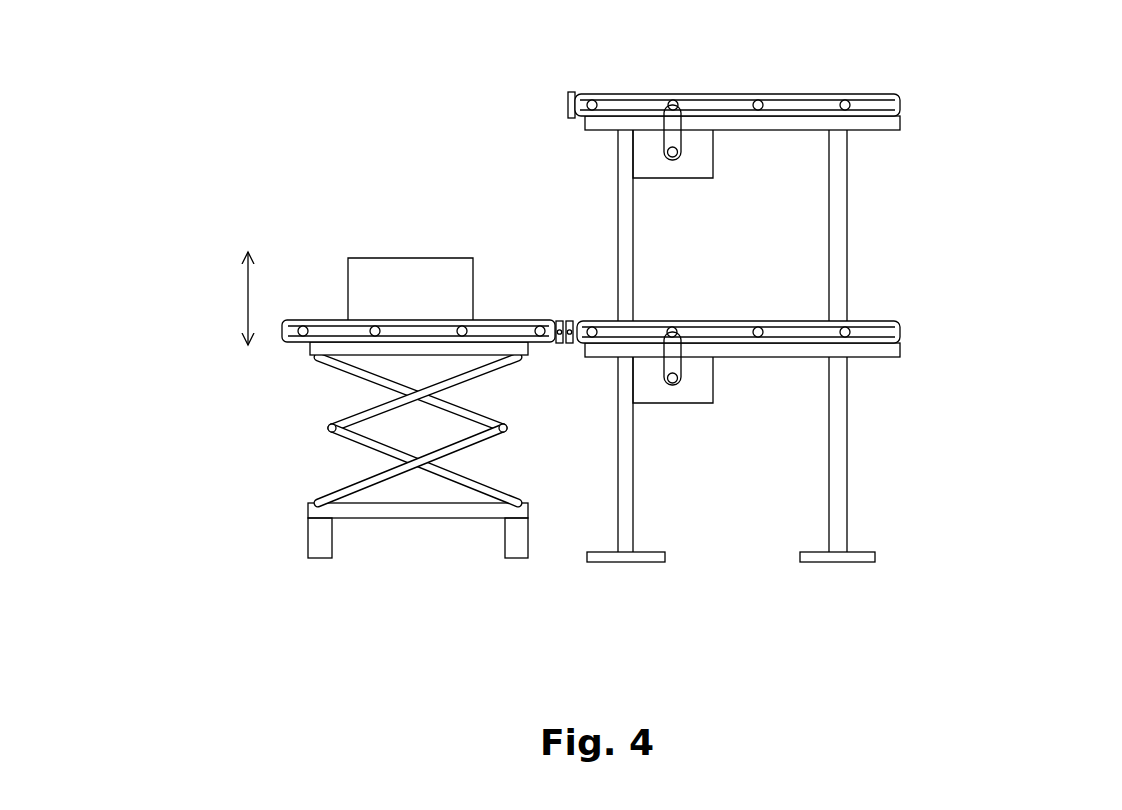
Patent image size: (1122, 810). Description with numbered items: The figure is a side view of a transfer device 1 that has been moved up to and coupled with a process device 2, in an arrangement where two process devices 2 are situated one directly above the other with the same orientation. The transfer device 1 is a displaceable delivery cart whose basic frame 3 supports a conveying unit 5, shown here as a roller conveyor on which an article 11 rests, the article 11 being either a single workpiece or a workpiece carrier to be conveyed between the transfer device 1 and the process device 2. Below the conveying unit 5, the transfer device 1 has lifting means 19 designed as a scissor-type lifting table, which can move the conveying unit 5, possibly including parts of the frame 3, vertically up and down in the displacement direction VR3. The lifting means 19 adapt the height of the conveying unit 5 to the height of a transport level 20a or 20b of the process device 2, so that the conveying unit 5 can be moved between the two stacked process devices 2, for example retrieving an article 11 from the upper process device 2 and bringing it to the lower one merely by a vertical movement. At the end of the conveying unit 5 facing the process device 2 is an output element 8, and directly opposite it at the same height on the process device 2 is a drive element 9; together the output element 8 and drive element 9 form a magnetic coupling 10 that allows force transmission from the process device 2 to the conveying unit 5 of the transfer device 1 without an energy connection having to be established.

The transfer device 1 is at (297, 190).
The displacement direction VR3 is at (248, 298).
The process device 2 is at (958, 150).
The basic frame 3 is at (292, 520).
The conveying unit 5 is at (503, 310).
The output element 8 is at (558, 345).
The drive element 9 is at (571, 345).
The magnetic coupling 10 is at (533, 280).
The article 11 is at (428, 307).
The lifting means 19 is at (253, 435).
The transport level 20a is at (821, 405).
The transport level 20b is at (825, 163).